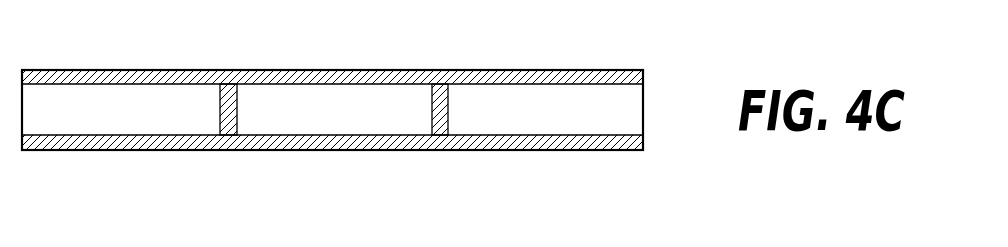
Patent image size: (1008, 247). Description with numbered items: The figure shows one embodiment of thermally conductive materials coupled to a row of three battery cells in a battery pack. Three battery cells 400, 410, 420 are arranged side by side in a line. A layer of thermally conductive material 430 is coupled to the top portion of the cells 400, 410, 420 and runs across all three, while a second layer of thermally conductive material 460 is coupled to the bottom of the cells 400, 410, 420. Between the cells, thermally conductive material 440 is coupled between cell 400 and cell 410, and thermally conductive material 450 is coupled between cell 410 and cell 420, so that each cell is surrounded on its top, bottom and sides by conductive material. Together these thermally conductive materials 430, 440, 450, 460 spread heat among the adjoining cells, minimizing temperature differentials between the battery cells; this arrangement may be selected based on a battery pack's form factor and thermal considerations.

The battery cell 400 is at (160, 120).
The battery cell 410 is at (373, 120).
The battery cell 420 is at (585, 120).
The thermally conductive material 430 is at (165, 70).
The thermally conductive material 440 is at (230, 135).
The thermally conductive material 450 is at (442, 135).
The thermally conductive material 460 is at (117, 150).